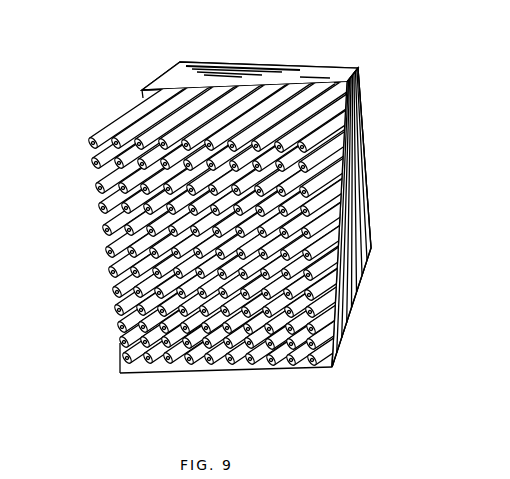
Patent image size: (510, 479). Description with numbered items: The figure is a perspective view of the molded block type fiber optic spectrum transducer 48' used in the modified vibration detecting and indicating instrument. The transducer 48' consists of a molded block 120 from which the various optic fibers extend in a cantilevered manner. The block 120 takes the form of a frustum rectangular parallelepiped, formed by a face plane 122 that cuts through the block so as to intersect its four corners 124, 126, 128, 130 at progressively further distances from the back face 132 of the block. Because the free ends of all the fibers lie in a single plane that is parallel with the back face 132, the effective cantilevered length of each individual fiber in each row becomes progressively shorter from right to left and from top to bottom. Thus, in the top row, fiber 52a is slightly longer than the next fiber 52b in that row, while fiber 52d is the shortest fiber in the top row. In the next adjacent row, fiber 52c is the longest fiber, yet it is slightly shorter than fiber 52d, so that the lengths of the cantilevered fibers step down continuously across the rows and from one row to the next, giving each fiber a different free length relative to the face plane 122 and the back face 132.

The fiber optic spectrum transducer 48' is at (256, 190).
The molded block 120 is at (353, 208).
The face plane 122 is at (150, 98).
The corner of the block 124 is at (366, 77).
The corner of the block 126 is at (172, 79).
The corner of the block 128 is at (345, 325).
The corner of the block 130 is at (120, 373).
The back face 132 is at (367, 152).
The fiber 52a is at (346, 98).
The fiber 52b is at (317, 100).
The fiber 52c is at (342, 116).
The fiber 52d is at (92, 146).